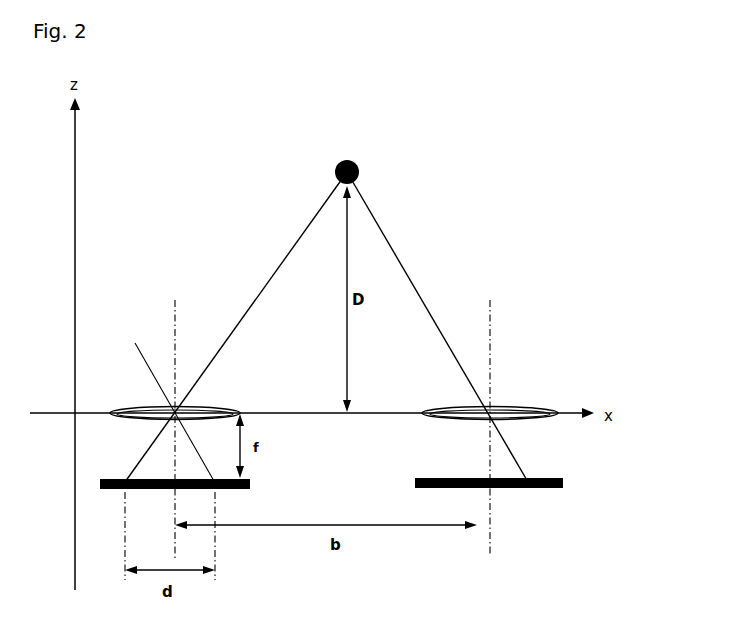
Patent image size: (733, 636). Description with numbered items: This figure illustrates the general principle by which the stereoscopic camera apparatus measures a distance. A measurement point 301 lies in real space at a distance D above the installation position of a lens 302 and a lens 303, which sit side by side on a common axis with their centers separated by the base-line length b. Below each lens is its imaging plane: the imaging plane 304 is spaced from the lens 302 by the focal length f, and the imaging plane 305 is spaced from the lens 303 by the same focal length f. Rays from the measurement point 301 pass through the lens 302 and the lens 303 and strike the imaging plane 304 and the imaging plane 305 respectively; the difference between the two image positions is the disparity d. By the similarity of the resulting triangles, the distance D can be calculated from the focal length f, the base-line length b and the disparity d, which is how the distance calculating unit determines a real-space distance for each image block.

The measurement point 301 is at (358, 162).
The lens 302 is at (203, 411).
The lens 303 is at (510, 409).
The imaging plane 304 is at (231, 489).
The imaging plane 305 is at (544, 486).